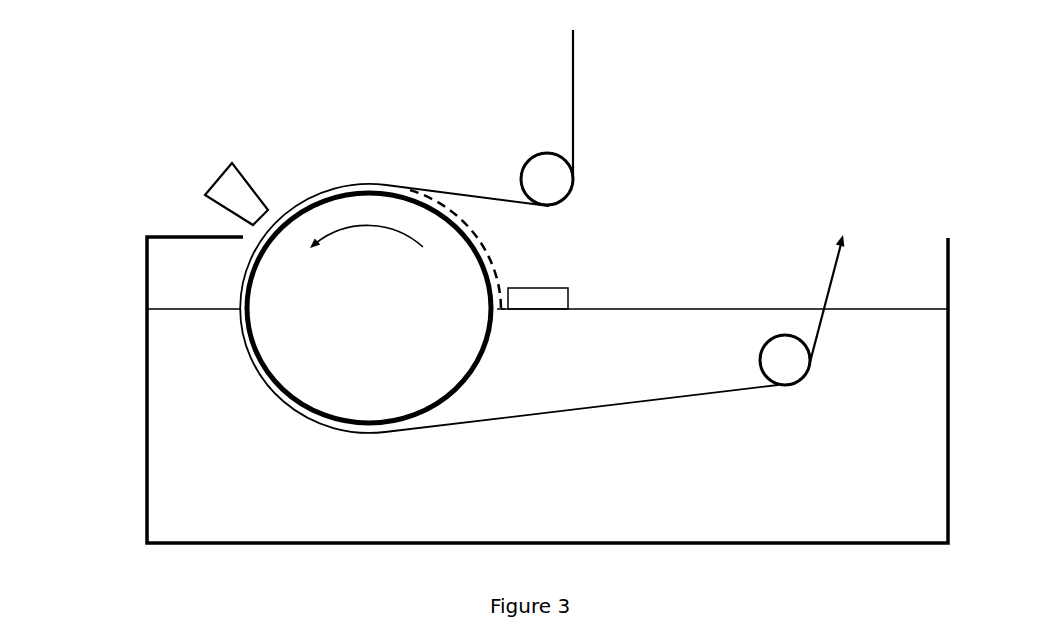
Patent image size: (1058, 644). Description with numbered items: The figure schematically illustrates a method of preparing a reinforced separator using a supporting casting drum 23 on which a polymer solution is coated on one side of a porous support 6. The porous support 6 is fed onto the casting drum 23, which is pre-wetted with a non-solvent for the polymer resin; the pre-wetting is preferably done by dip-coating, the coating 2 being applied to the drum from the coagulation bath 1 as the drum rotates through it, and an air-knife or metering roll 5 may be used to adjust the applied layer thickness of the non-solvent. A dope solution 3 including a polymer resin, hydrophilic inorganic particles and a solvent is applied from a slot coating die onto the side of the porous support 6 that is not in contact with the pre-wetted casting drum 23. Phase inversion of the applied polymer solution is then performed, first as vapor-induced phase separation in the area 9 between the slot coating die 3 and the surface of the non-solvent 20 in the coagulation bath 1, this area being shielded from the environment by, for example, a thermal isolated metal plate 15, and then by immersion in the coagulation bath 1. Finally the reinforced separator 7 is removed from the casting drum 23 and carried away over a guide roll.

The coagulation bath 1 is at (547, 390).
The coating 2 is at (487, 245).
The dope solution 3 is at (250, 182).
The air-knife or metering roll 5 is at (538, 288).
The porous support 6 is at (548, 53).
The reinforced separator 7 is at (824, 292).
The area 9 is at (547, 275).
The thermal isolated metal plate 15 is at (182, 237).
The surface of the non-solvent 20 is at (179, 309).
The casting drum 23 is at (369, 308).